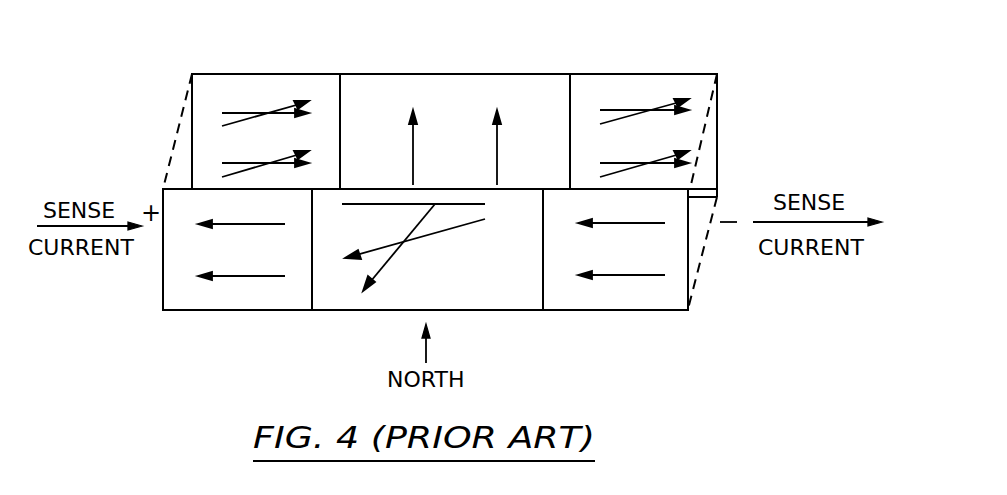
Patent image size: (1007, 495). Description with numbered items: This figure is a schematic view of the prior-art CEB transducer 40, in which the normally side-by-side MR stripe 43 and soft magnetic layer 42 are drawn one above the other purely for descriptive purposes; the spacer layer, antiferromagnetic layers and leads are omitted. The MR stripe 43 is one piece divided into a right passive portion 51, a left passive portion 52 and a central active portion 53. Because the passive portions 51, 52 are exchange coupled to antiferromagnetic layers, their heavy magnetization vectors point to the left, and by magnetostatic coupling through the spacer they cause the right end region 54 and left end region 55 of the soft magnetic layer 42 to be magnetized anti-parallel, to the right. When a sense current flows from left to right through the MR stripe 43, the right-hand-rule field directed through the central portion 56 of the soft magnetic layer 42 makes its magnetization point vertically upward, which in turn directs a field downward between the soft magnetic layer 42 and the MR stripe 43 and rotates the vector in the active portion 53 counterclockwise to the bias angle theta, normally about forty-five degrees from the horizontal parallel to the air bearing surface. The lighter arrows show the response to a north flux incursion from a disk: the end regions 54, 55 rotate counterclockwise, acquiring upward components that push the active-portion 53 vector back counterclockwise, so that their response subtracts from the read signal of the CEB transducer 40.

The CEB transducer 40 is at (518, 195).
The soft magnetic layer 42 is at (466, 102).
The MR stripe 43 is at (455, 286).
The right passive portion of the MR stripe 51 is at (622, 305).
The left passive portion of the MR stripe 52 is at (242, 305).
The active portion of the MR stripe 53 is at (493, 307).
The right end region of the soft magnetic layer 54 is at (648, 80).
The left end region of the soft magnetic layer 55 is at (268, 83).
The central portion of the soft magnetic layer 56 is at (447, 80).